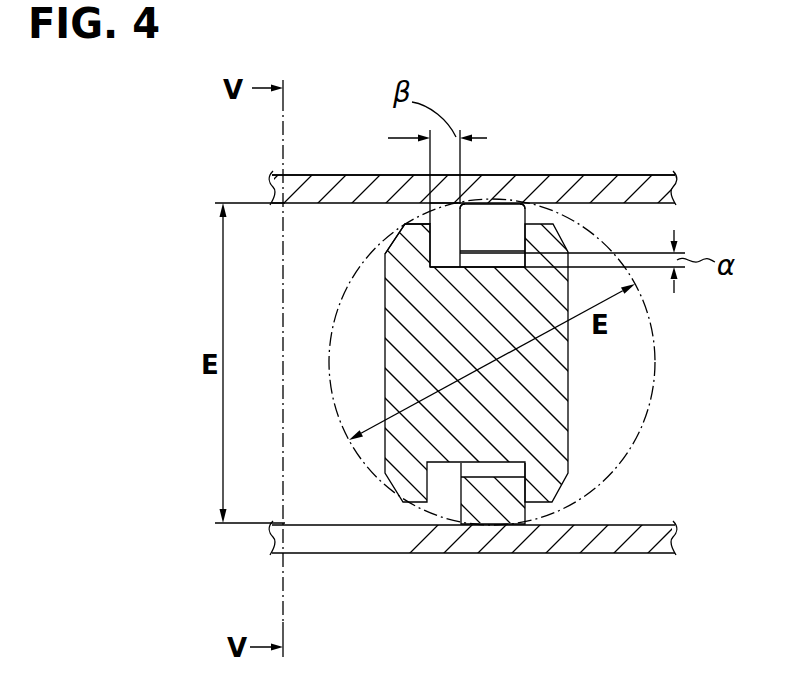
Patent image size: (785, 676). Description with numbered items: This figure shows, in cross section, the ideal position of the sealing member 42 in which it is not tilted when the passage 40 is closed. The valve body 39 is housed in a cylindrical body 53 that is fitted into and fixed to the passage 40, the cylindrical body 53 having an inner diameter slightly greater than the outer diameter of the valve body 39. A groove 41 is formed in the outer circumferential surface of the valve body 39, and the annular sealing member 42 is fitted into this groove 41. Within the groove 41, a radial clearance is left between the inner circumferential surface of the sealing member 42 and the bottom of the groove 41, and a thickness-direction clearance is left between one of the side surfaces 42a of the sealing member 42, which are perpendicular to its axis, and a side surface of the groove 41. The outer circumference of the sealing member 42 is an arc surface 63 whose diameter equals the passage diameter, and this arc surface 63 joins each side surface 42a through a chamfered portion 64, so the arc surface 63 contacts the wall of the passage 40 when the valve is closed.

The valve body 39 is at (430, 303).
The passage 40 is at (615, 522).
The groove 41 is at (398, 243).
The sealing member 42 is at (597, 192).
The side surface 42a is at (458, 224).
The cylindrical body 53 is at (372, 185).
The arc surface 63 is at (510, 227).
The chamfered portion 64 is at (463, 206).